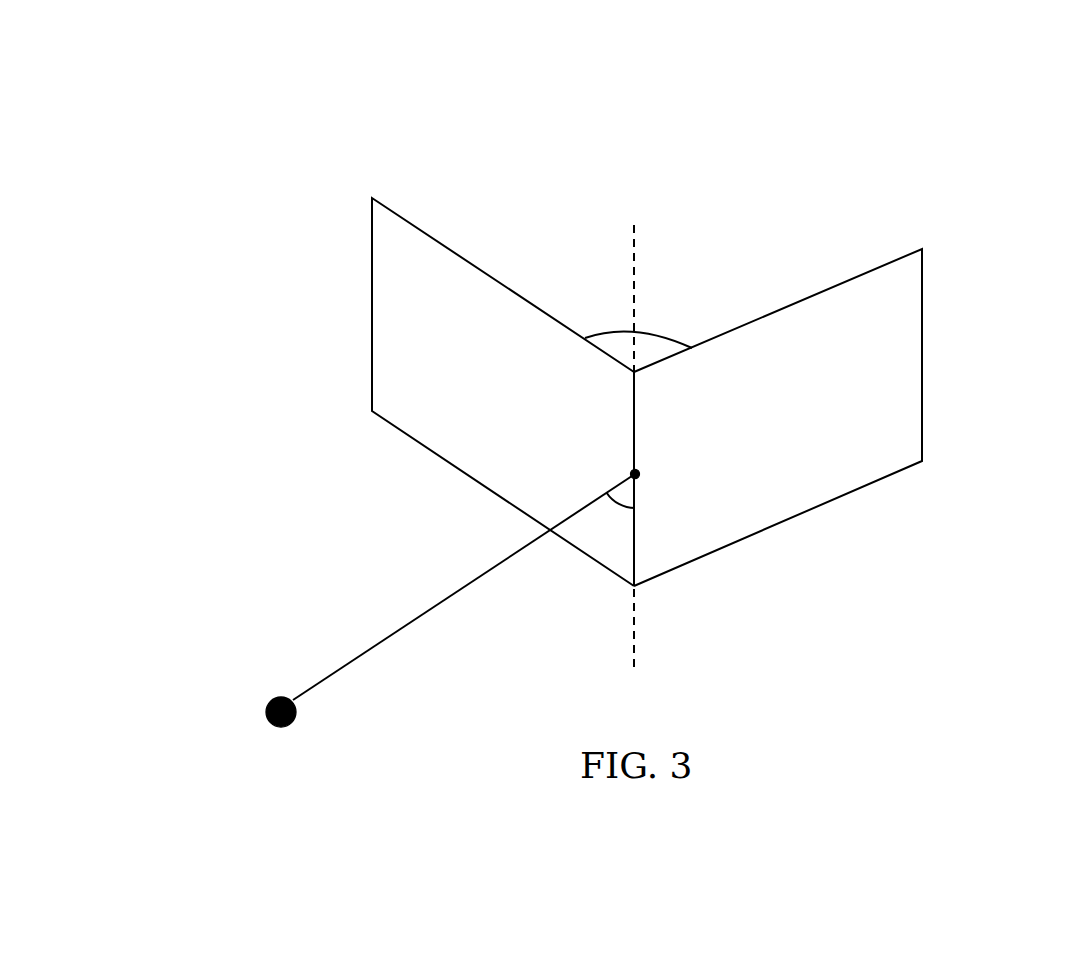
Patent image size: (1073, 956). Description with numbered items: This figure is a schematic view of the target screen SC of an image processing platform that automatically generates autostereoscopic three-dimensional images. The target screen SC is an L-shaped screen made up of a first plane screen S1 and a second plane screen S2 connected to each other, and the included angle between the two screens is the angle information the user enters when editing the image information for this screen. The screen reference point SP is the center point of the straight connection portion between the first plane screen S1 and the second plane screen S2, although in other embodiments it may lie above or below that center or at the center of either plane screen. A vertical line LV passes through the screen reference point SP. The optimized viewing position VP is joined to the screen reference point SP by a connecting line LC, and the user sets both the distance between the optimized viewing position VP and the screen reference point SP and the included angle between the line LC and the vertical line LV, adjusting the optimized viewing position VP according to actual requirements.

The target screen SC is at (651, 339).
The first plane screen S1 is at (372, 309).
The second plane screen S2 is at (922, 323).
The vertical line LV is at (636, 434).
The screen reference point SP is at (650, 475).
The line connecting the optimized viewing position to the screen reference point LC is at (400, 628).
The optimized viewing position VP is at (275, 698).